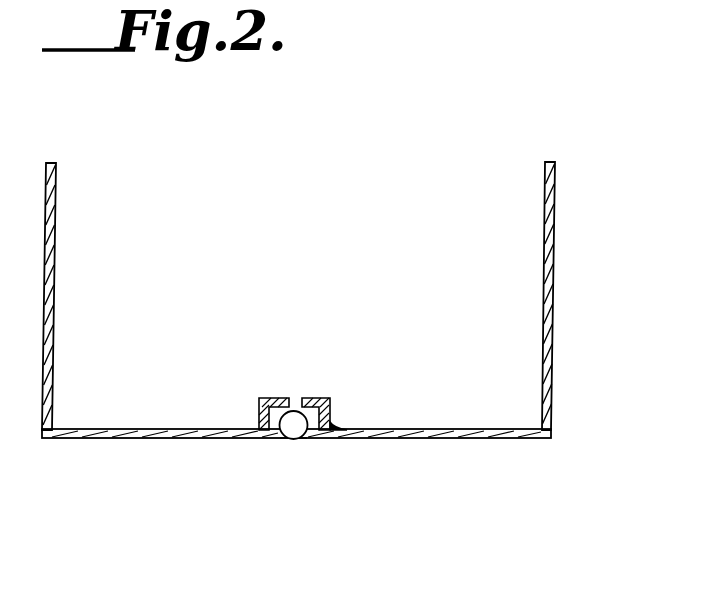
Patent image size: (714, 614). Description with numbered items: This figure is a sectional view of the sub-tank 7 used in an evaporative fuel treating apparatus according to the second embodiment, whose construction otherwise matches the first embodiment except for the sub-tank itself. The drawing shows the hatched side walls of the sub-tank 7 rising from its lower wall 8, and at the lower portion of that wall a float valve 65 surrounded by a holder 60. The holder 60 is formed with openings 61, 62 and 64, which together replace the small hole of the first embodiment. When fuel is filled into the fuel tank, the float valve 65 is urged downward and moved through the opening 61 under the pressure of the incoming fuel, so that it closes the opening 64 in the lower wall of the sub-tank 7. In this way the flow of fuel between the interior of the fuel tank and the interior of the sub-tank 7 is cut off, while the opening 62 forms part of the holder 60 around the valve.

The sub-tank 7 is at (549, 412).
The bottom plate 8 is at (189, 407).
The holder 60 is at (329, 491).
The opening 61 is at (297, 401).
The opening 62 is at (335, 424).
The opening 64 is at (307, 443).
The float valve 65 is at (292, 430).